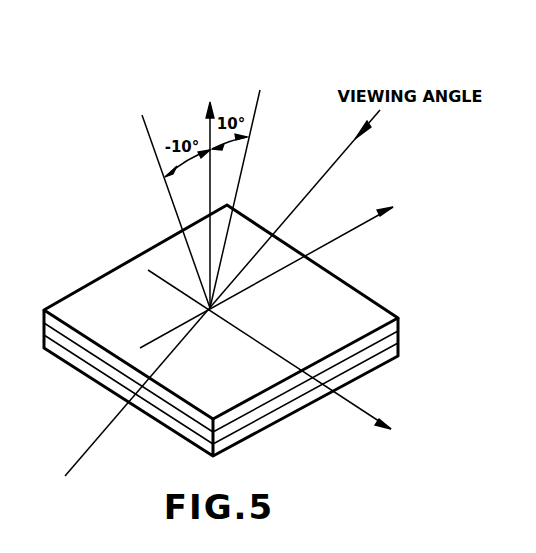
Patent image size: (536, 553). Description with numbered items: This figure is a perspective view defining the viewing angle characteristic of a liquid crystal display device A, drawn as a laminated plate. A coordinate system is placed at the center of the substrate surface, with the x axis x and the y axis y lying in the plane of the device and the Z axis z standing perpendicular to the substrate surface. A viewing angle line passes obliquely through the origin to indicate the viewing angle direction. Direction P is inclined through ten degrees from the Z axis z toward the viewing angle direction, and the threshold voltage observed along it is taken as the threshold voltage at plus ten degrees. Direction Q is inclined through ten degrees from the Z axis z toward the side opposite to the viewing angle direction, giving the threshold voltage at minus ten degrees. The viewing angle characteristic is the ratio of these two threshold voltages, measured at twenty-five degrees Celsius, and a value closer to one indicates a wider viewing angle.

The liquid crystal display device A is at (363, 303).
The direction P is at (270, 74).
The direction Q is at (147, 99).
The x axis x is at (273, 272).
The y axis y is at (276, 355).
The Z axis z is at (210, 193).